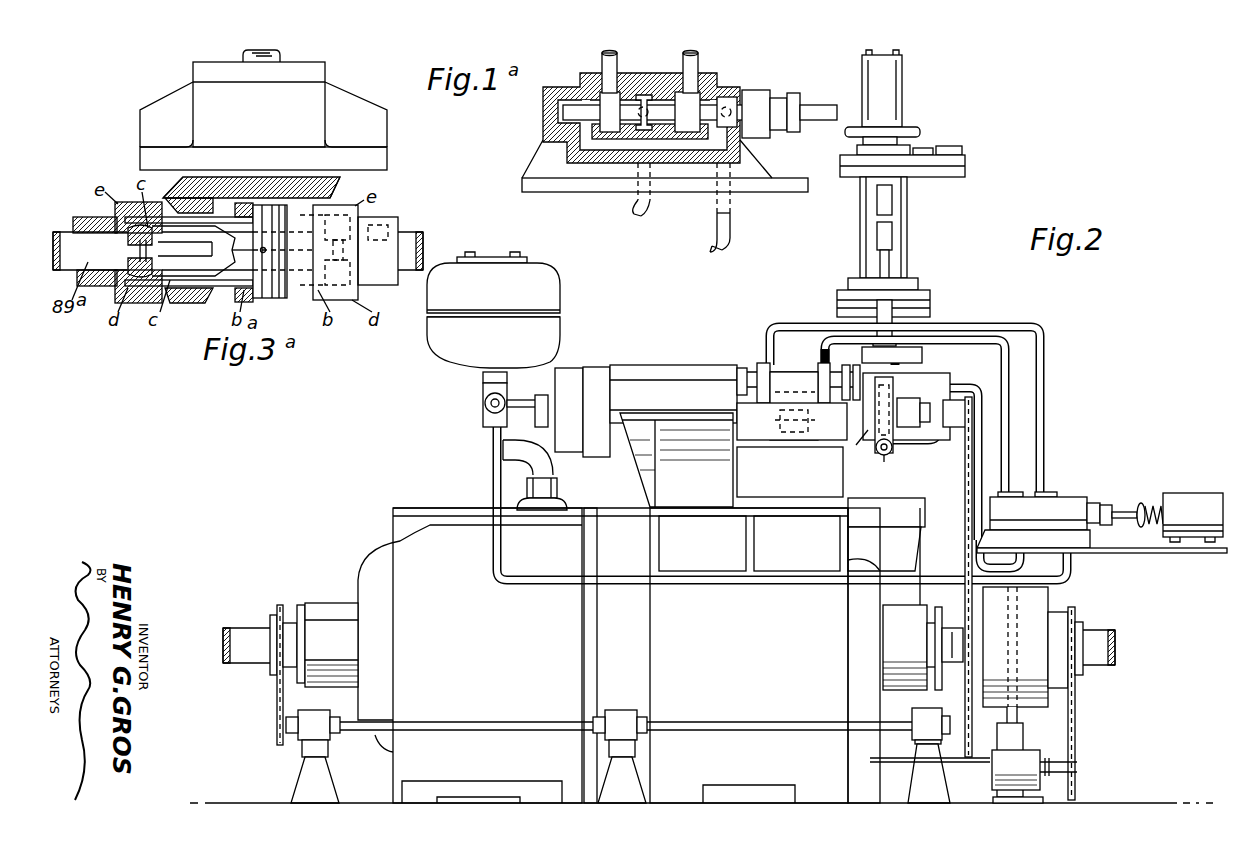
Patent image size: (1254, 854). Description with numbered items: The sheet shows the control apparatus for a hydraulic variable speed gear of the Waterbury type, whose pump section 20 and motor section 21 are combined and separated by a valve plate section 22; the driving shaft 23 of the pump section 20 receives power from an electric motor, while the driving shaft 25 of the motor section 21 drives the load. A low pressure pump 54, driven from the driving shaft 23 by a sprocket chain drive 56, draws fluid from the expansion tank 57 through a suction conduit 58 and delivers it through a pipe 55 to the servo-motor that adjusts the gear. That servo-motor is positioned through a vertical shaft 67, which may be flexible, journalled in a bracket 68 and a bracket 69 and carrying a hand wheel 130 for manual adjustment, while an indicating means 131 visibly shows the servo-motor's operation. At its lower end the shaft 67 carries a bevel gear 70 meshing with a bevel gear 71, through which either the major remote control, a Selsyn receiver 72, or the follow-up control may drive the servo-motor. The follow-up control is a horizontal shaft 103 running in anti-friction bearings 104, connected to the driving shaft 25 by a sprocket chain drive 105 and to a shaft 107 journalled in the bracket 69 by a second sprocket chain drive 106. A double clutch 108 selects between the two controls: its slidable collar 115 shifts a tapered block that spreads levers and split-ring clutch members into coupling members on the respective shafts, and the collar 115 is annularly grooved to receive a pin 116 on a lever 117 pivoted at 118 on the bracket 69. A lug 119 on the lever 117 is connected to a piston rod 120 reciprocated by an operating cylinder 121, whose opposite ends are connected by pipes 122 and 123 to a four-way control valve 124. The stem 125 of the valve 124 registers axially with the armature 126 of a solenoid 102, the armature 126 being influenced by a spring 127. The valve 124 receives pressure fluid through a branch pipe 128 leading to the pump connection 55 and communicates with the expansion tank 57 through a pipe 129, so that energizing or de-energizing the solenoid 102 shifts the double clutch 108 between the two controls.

In FIG. 2, the pump unit or section 20 is at (765, 655).
In FIG. 2, the motor unit or section 21 is at (470, 655).
In FIG. 2, the valve plate section 22 is at (609, 655).
In FIG. 2, the driving shaft 23 is at (1100, 633).
In FIG. 2, the driving shaft 25 is at (245, 636).
In FIG. 2, the low pressure pump 54 is at (1032, 749).
In FIG. 2, the pipe 55 is at (1002, 447).
In FIG. 2, the sprocket chain drive 56 is at (1077, 694).
In FIG. 2, the expansion tank 57 is at (548, 289).
In FIG. 2, the suction conduit 58 is at (882, 765).
In FIG. 3A, the vertical shaft 67 is at (281, 52).
In FIG. 2, the vertical shaft 67 is at (891, 263).
In FIG. 2, the bracket 68 is at (967, 167).
In FIG. 3A, the bracket 69 is at (263, 116).
In FIG. 2, the bracket 69 is at (906, 388).
In FIG. 3A, the bevel gear 70 is at (298, 178).
In FIG. 2, the bevel gear 70 is at (909, 401).
In FIG. 3A, the bevel gear 71 is at (222, 285).
In FIG. 2, the bevel gear 71 is at (836, 441).
In FIG. 2, the Selsyn receiver 72 is at (665, 365).
In FIG. 2, the solenoid 102 is at (1196, 500).
In FIG. 2, the horizontal shaft 103 is at (500, 736).
In FIG. 2, the bearings 104 is at (312, 727).
In FIG. 2, the sprocket chain drive 105 is at (277, 708).
In FIG. 2, the second sprocket chain drive 106 is at (1001, 481).
In FIG. 3A, the shaft 107 is at (428, 213).
In FIG. 2, the shaft 107 is at (986, 404).
In FIG. 2, the double clutch 108 is at (856, 445).
In FIG. 3A, the slidable collar 115 is at (282, 300).
In FIG. 2, the slidable collar 115 is at (886, 460).
In FIG. 2, the pin 116 is at (931, 391).
In FIG. 2, the lever 117 is at (912, 364).
In FIG. 2, the pivot 118 is at (883, 460).
In FIG. 2, the lug 119 is at (898, 363).
In FIG. 2, the piston rod 120 is at (826, 350).
In FIG. 2, the operating cylinder 121 is at (781, 376).
In FIG. 1A, the pipe 122 is at (693, 62).
In FIG. 2, the pipe 122 is at (1050, 367).
In FIG. 1A, the pipe 123 is at (616, 62).
In FIG. 2, the pipe 123 is at (1014, 356).
In FIG. 1A, the four-way control valve 124 is at (736, 85).
In FIG. 2, the four-way control valve 124 is at (1086, 505).
In FIG. 1A, the stem 125 is at (824, 104).
In FIG. 2, the stem 125 is at (1135, 508).
In FIG. 2, the armature 126 is at (1142, 537).
In FIG. 2, the spring 127 is at (1160, 510).
In FIG. 1A, the branch pipe 128 is at (646, 212).
In FIG. 2, the branch pipe 128 is at (1070, 577).
In FIG. 1A, the pipe 129 is at (734, 236).
In FIG. 2, the pipe 129 is at (771, 587).
In FIG. 2, the hand wheel 130 is at (917, 128).
In FIG. 2, the indicating means 131 is at (946, 149).